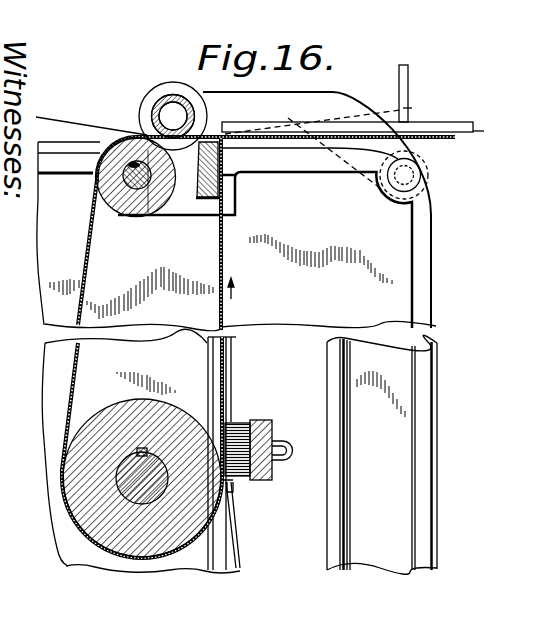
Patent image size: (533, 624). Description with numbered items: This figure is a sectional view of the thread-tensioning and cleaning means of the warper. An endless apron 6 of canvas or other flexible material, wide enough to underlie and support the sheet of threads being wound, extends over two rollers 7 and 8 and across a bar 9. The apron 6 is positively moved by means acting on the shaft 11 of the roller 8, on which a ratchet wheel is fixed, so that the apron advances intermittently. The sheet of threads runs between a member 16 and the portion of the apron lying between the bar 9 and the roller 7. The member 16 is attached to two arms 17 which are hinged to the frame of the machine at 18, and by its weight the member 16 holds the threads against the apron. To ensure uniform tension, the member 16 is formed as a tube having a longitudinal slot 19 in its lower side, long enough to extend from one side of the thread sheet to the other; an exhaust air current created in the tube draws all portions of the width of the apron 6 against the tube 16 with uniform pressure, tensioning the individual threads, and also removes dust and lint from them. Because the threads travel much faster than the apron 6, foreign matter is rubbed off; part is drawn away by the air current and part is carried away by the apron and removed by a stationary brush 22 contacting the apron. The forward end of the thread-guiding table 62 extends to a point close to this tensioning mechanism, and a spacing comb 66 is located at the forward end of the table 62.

The endless apron 6 is at (80, 256).
The roller 7 is at (125, 216).
The roller 8 is at (106, 421).
The bar 9 is at (200, 199).
The shaft 11 is at (132, 502).
The member 16 is at (157, 107).
The arms 17 is at (338, 91).
The hinge 18 is at (405, 175).
The longitudinal slot 19 is at (173, 137).
The stationary brush 22 is at (237, 430).
The table 62 is at (455, 139).
The spacing comb 66 is at (409, 70).